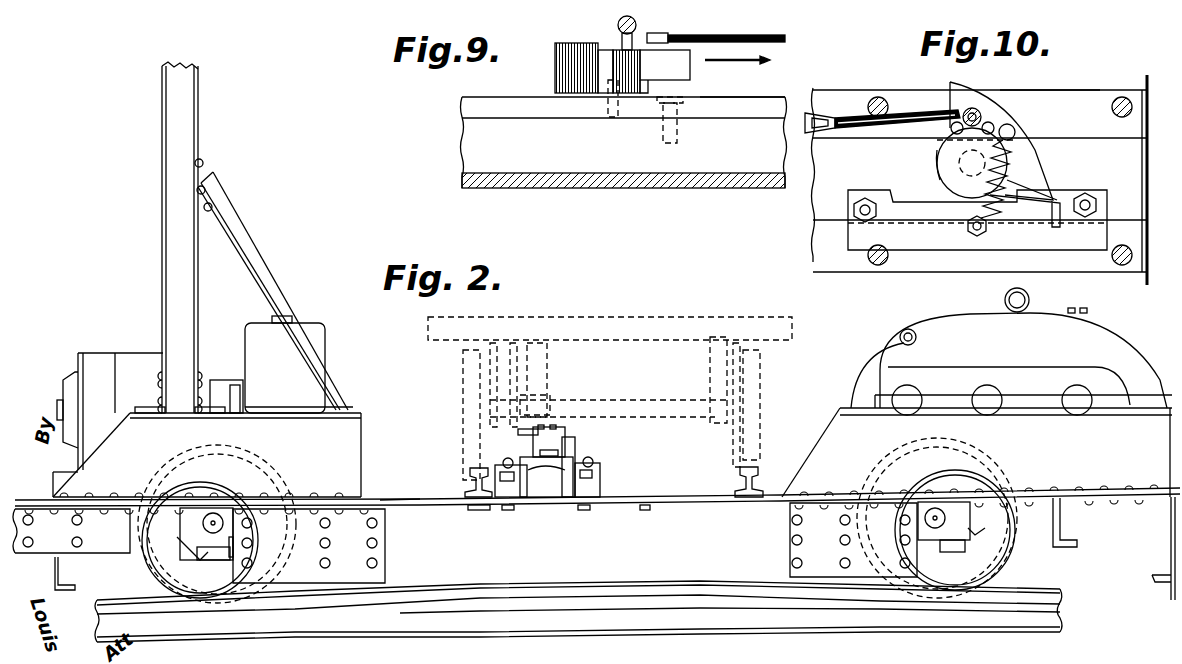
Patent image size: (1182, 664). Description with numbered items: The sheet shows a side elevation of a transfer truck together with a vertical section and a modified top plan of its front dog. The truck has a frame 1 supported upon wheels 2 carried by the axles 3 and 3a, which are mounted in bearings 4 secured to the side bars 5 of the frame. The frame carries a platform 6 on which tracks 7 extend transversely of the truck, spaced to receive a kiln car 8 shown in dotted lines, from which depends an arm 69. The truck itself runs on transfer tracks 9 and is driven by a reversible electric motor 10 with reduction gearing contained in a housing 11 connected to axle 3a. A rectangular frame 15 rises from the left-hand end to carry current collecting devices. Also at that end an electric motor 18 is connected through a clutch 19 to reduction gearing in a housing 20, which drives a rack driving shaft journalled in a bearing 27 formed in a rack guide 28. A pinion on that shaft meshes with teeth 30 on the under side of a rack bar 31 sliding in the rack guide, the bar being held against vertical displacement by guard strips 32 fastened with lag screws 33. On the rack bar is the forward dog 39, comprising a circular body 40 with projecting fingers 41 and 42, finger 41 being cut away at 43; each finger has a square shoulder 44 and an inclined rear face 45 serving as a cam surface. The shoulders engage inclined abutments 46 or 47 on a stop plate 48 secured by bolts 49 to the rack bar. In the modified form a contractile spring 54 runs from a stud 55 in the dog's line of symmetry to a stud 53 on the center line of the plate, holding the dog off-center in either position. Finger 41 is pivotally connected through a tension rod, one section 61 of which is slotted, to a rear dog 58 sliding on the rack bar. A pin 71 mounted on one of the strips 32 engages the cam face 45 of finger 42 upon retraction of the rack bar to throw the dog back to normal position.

In FIG. 2, the frame 1 is at (408, 494).
In FIG. 2, the wheels 2 is at (187, 553).
In FIG. 2, the axle 3 is at (214, 524).
In FIG. 2, the axle 3a is at (933, 510).
In FIG. 2, the bearings 4 is at (186, 538).
In FIG. 2, the side bars 5 is at (720, 538).
In FIG. 2, the platform 6 is at (672, 497).
In FIG. 9, the platform 6 is at (748, 182).
In FIG. 2, the tracks 7 is at (480, 466).
In FIG. 2, the kiln car 8 is at (663, 332).
In FIG. 2, the transfer tracks 9 is at (628, 597).
In FIG. 2, the electric motor 10 is at (876, 368).
In FIG. 2, the housing 11 is at (1023, 351).
In FIG. 2, the rectangular frame 15 is at (179, 210).
In FIG. 2, the electric motor 18 is at (107, 350).
In FIG. 2, the clutch 19 is at (232, 380).
In FIG. 2, the housing 20 is at (267, 342).
In FIG. 2, the bearing 27 is at (596, 472).
In FIG. 2, the rack guide 28 is at (563, 483).
In FIG. 2, the teeth 30 is at (551, 455).
In FIG. 2, the rack bar 31 is at (543, 445).
In FIG. 9, the rack bar 31 is at (763, 97).
In FIG. 2, the guard strips 32 is at (568, 440).
In FIG. 9, the guard strips 32 is at (487, 107).
In FIG. 10, the guard strips 32 is at (1036, 92).
In FIG. 9, the lag screws 33 is at (682, 108).
In FIG. 10, the lag screws 33 is at (1118, 97).
In FIG. 9, the forward dog 39 is at (597, 62).
In FIG. 10, the forward dog 39 is at (975, 163).
In FIG. 10, the circular body 40 is at (938, 168).
In FIG. 9, the finger 41 is at (695, 38).
In FIG. 10, the finger 41 is at (972, 104).
In FIG. 9, the finger 42 is at (555, 62).
In FIG. 10, the finger 42 is at (1036, 185).
In FIG. 9, the cut-away 43 is at (673, 80).
In FIG. 10, the square shoulder 44 is at (946, 94).
In FIG. 9, the inclined rear face 45 is at (573, 78).
In FIG. 10, the inclined abutment 46 is at (920, 205).
In FIG. 10, the inclined abutment 47 is at (1053, 212).
In FIG. 10, the stop plate 48 is at (950, 240).
In FIG. 10, the bolts 49 is at (1096, 207).
In FIG. 10, the stud 53 is at (987, 228).
In FIG. 10, the contractile spring 54 is at (1007, 182).
In FIG. 9, the stud 55 is at (620, 37).
In FIG. 10, the stud 55 is at (1015, 130).
In FIG. 2, the rear dog 58 is at (523, 430).
In FIG. 9, the tension rod section 61 is at (788, 37).
In FIG. 10, the tension rod section 61 is at (855, 110).
In FIG. 2, the arm 69 is at (522, 398).
In FIG. 9, the pin 71 is at (607, 94).